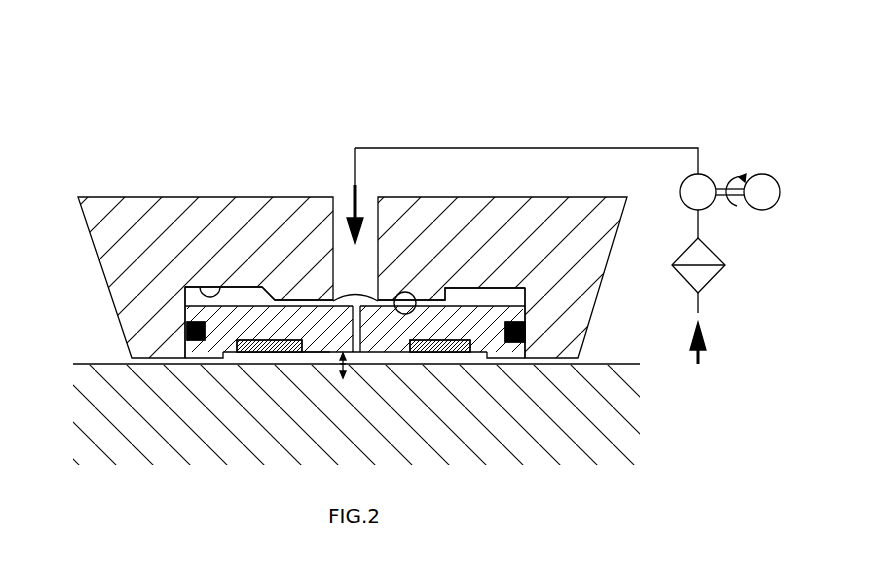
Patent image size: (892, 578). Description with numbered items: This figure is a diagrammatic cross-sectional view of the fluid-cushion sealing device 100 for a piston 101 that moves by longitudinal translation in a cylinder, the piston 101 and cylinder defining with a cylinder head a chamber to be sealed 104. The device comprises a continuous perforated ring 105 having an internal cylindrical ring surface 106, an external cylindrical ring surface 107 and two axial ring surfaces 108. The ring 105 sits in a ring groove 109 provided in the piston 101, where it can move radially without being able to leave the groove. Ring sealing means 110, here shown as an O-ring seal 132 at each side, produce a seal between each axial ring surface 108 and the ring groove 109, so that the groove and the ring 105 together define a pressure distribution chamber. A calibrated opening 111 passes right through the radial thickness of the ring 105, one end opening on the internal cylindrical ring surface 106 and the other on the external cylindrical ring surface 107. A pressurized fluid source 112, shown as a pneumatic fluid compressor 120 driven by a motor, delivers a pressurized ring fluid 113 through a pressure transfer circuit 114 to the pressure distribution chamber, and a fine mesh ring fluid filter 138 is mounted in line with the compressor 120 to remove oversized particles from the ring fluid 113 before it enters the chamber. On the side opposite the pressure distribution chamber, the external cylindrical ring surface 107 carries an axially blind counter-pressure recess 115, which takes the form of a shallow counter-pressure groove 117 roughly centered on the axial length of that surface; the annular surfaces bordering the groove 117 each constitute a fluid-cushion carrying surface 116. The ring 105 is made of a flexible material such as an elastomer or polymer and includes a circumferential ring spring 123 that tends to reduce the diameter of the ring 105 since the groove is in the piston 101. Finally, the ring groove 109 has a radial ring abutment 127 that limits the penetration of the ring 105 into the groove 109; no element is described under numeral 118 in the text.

The fluid-cushion sealing device 100 is at (646, 72).
The piston 101 is at (128, 220).
The chamber to be sealed 104 is at (72, 238).
The continuous perforated ring 105 is at (308, 322).
The internal cylindrical ring surface 106 is at (462, 285).
The external cylindrical ring surface 107 is at (343, 377).
The axial ring surfaces 108 is at (177, 317).
The ring groove 109 is at (222, 283).
The ring sealing means 110 is at (176, 328).
The calibrated opening 111 is at (360, 336).
The pressurized fluid source 112 is at (732, 212).
The pressurized ring fluid 113 is at (237, 283).
The pressure transfer circuit 114 is at (397, 148).
The counter-pressure recess 115 is at (343, 377).
The fluid-cushion carrying surface 116 is at (207, 357).
The counter-pressure groove 117 is at (313, 360).
The right cover plate 118 is at (526, 287).
The pneumatic fluid compressor 120 is at (713, 205).
The circumferential ring spring 123 is at (270, 352).
The radial ring abutment 127 is at (410, 292).
The O-ring seal 132 is at (190, 343).
The ring fluid filter 138 is at (715, 283).